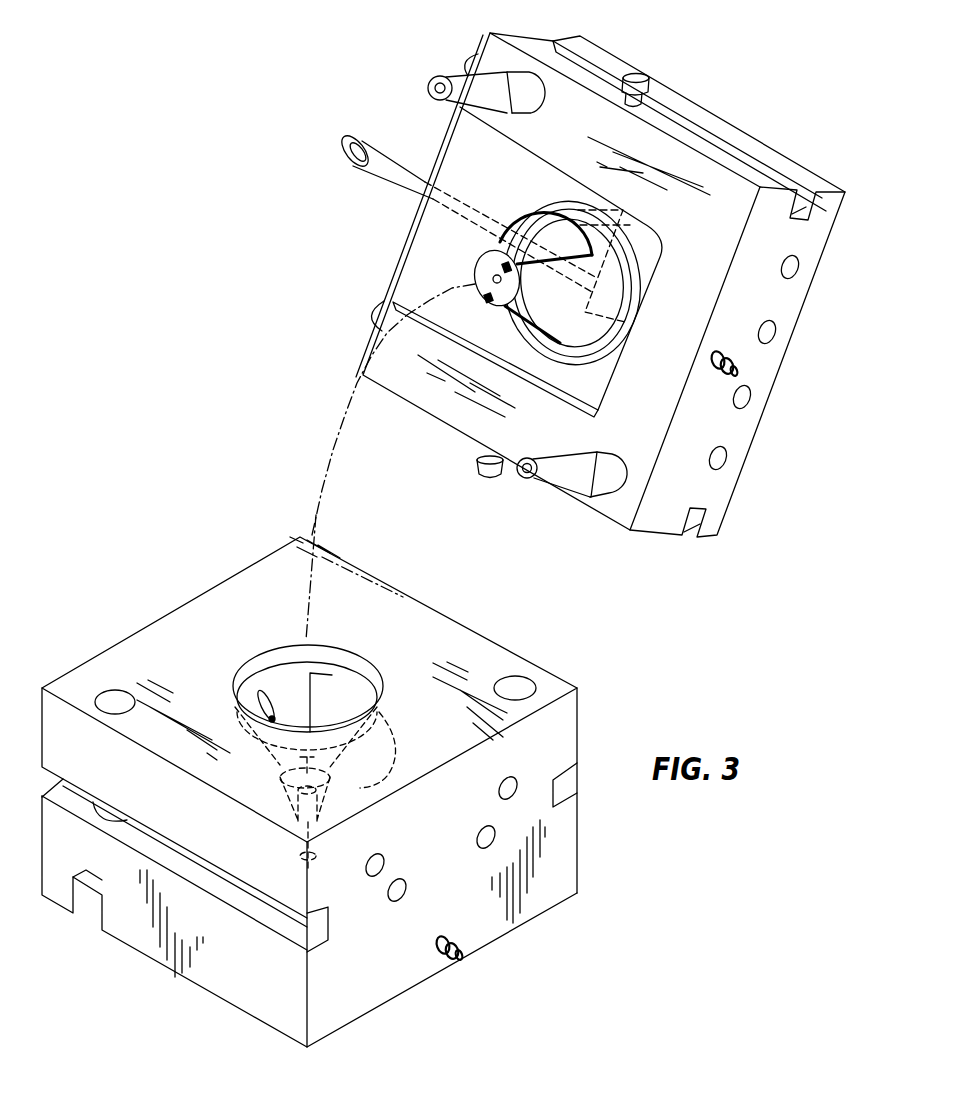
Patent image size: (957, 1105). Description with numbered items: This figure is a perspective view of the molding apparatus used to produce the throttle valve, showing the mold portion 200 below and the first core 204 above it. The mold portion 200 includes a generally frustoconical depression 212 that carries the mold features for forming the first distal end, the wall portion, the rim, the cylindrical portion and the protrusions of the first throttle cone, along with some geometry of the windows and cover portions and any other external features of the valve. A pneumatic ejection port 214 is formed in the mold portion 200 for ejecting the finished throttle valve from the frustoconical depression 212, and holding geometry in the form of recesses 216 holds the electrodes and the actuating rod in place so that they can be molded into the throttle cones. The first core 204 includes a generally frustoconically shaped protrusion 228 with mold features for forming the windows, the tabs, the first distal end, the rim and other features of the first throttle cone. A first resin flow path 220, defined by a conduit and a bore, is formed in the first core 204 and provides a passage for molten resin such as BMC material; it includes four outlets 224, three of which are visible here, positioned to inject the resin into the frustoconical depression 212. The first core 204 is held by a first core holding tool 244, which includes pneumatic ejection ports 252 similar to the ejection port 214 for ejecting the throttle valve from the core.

The mold portion 200 is at (562, 874).
The first core 204 is at (438, 258).
The generally frustoconical depression 212 is at (252, 668).
The pneumatic ejection port 214 is at (447, 958).
The recesses 216 is at (300, 842).
The first resin flow path 220 is at (402, 167).
The outlets 224 is at (569, 210).
The generally frustoconically shaped protrusion 228 is at (535, 232).
The first core holding tool 244 is at (788, 297).
The pneumatic ejection ports 252 is at (737, 360).